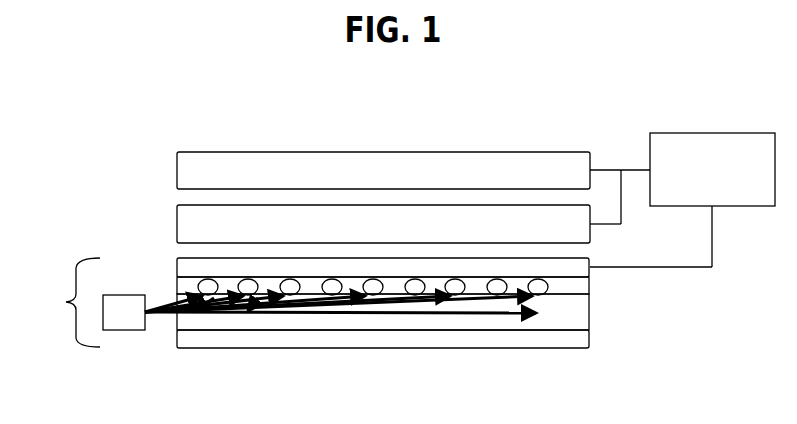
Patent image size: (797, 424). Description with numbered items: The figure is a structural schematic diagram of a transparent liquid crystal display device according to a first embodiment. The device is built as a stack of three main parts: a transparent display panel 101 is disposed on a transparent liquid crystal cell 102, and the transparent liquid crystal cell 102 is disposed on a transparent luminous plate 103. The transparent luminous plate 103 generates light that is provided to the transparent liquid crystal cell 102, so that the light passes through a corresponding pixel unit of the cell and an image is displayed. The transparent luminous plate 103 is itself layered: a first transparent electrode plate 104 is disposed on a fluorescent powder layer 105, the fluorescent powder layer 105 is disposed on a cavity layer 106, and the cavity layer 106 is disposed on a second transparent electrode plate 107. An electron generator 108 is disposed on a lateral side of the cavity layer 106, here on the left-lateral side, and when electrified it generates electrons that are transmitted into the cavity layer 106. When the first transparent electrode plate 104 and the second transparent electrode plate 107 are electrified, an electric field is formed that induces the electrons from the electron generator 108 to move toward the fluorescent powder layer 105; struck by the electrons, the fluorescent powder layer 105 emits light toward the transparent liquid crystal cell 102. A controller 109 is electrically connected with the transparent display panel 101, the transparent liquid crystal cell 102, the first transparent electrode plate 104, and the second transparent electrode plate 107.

The transparent display panel 101 is at (177, 158).
The transparent liquid crystal cell 102 is at (177, 218).
The transparent luminous plate 103 is at (66, 302).
The first transparent electrode plate 104 is at (177, 264).
The fluorescent powder layer 105 is at (590, 284).
The cavity layer 106 is at (590, 312).
The second transparent electrode plate 107 is at (590, 340).
The electron generator 108 is at (127, 330).
The controller 109 is at (697, 133).